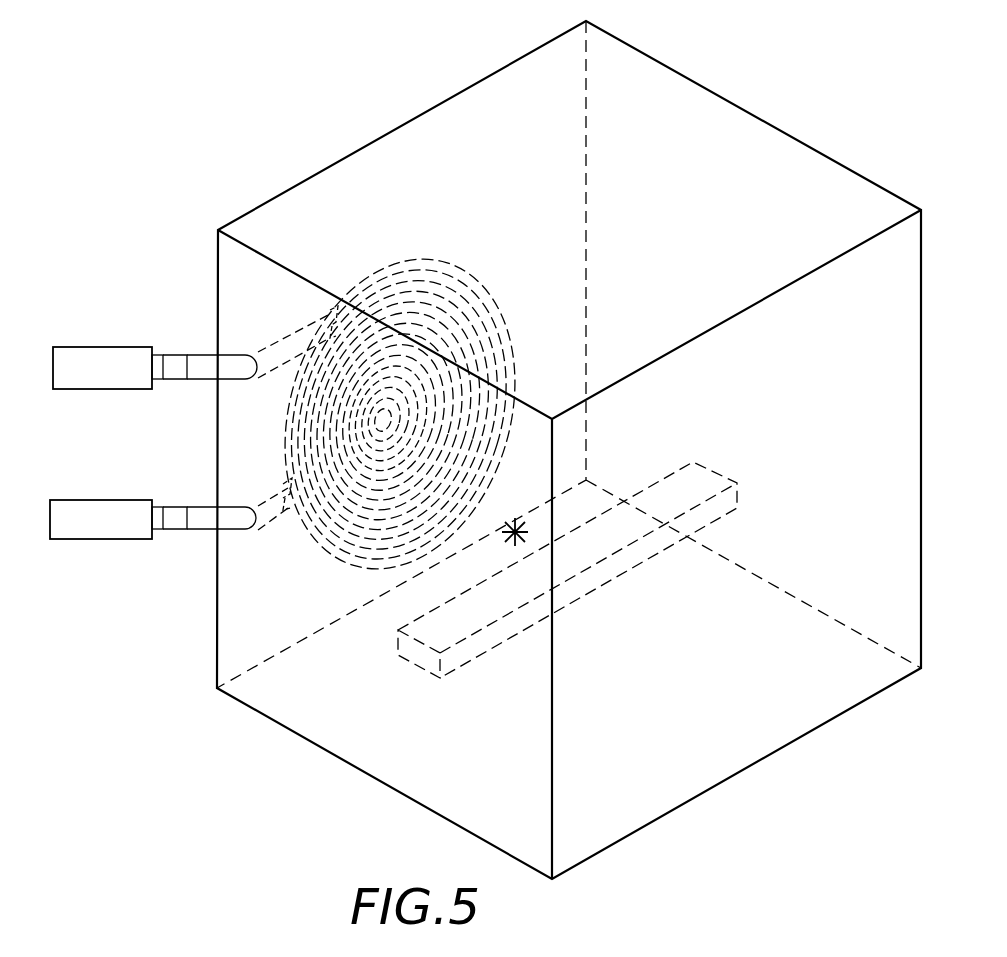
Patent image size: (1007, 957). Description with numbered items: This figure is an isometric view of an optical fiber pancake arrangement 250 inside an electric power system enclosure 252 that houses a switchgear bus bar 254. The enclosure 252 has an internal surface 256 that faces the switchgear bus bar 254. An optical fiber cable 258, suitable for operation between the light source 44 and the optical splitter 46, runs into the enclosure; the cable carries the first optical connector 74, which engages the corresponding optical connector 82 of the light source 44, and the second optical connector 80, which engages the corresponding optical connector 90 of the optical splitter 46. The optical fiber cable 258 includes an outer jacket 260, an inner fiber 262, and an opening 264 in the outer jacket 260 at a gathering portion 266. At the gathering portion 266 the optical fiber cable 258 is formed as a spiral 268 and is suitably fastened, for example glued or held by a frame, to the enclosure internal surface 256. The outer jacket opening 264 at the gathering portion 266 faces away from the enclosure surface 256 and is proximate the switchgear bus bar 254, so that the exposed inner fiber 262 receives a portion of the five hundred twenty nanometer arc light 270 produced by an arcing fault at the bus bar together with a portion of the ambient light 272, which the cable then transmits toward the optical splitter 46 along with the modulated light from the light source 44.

The light source 44 is at (70, 347).
The optical splitter 46 is at (66, 500).
The first optical connector 74 is at (176, 362).
The second optical connector 80 is at (176, 514).
The optical connector of the light source 82 is at (160, 378).
The optical connector of the optical splitter 90 is at (160, 530).
The optical fiber pancake arrangement 250 is at (316, 560).
The electric power system enclosure 252 is at (792, 744).
The switchgear bus bar 254 is at (600, 548).
The internal surface 256 is at (337, 192).
The optical fiber cable 258 is at (204, 360).
The outer jacket 260 is at (435, 262).
The inner fiber 262 is at (456, 266).
The opening 264 is at (328, 312).
The gathering portion 266 is at (354, 576).
The spiral 268 is at (452, 482).
The arc light 270 is at (492, 488).
The ambient light 272 is at (624, 421).